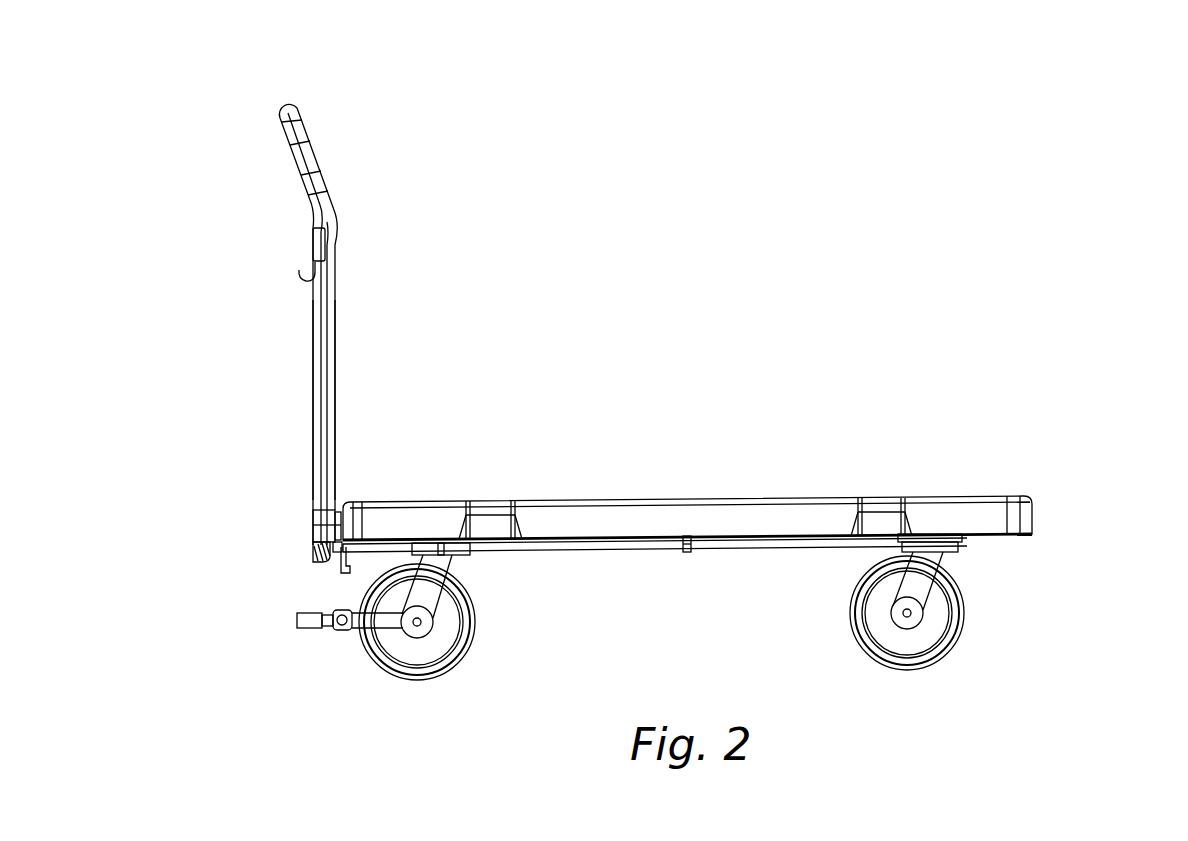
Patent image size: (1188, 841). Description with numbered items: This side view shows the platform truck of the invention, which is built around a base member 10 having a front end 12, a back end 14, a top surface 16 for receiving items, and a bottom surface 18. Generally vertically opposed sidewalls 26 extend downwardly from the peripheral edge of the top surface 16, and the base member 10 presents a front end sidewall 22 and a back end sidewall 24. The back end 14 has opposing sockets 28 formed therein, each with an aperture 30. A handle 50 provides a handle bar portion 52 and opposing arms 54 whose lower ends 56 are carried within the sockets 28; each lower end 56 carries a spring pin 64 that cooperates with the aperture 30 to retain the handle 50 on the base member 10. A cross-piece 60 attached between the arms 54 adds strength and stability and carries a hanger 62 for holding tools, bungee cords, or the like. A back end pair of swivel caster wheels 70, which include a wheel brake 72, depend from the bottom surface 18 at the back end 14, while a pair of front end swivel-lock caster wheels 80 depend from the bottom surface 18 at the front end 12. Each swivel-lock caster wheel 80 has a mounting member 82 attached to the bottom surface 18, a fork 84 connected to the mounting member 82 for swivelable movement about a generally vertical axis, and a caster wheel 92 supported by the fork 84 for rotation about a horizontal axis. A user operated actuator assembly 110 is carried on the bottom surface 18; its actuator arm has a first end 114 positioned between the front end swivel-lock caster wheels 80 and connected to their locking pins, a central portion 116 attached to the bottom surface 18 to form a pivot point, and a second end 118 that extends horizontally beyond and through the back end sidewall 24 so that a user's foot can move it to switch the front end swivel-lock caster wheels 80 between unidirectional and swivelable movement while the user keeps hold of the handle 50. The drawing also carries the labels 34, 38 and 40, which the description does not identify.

The base member 10 is at (617, 499).
The front end 12 is at (1030, 495).
The back end 14 is at (350, 505).
The top surface 16 is at (705, 500).
The bottom surface 18 is at (842, 546).
The front end sidewall 22 is at (1024, 518).
The back end sidewall 24 is at (335, 528).
The sidewalls 26 is at (538, 522).
The sockets 28 is at (313, 512).
The aperture 30 is at (313, 522).
The linkage 34 is at (343, 567).
The pin 38 is at (689, 553).
The center bracket 40 is at (685, 552).
The handle 50 is at (318, 158).
The handle bar portion 52 is at (295, 108).
The arms 54 is at (335, 300).
The lower ends 56 is at (327, 493).
The cross-piece 60 is at (317, 243).
The hanger 62 is at (303, 280).
The spring pin 64 is at (313, 523).
The swivel caster wheels 70 is at (378, 667).
The wheel brake 72 is at (303, 622).
The swivel-lock caster wheels 80 is at (908, 660).
The mounting member 82 is at (958, 548).
The fork 84 is at (955, 597).
The caster wheel 92 is at (943, 658).
The actuator assembly 110 is at (553, 553).
The first end 114 is at (868, 542).
The central portion 116 is at (663, 543).
The second end 118 is at (327, 563).